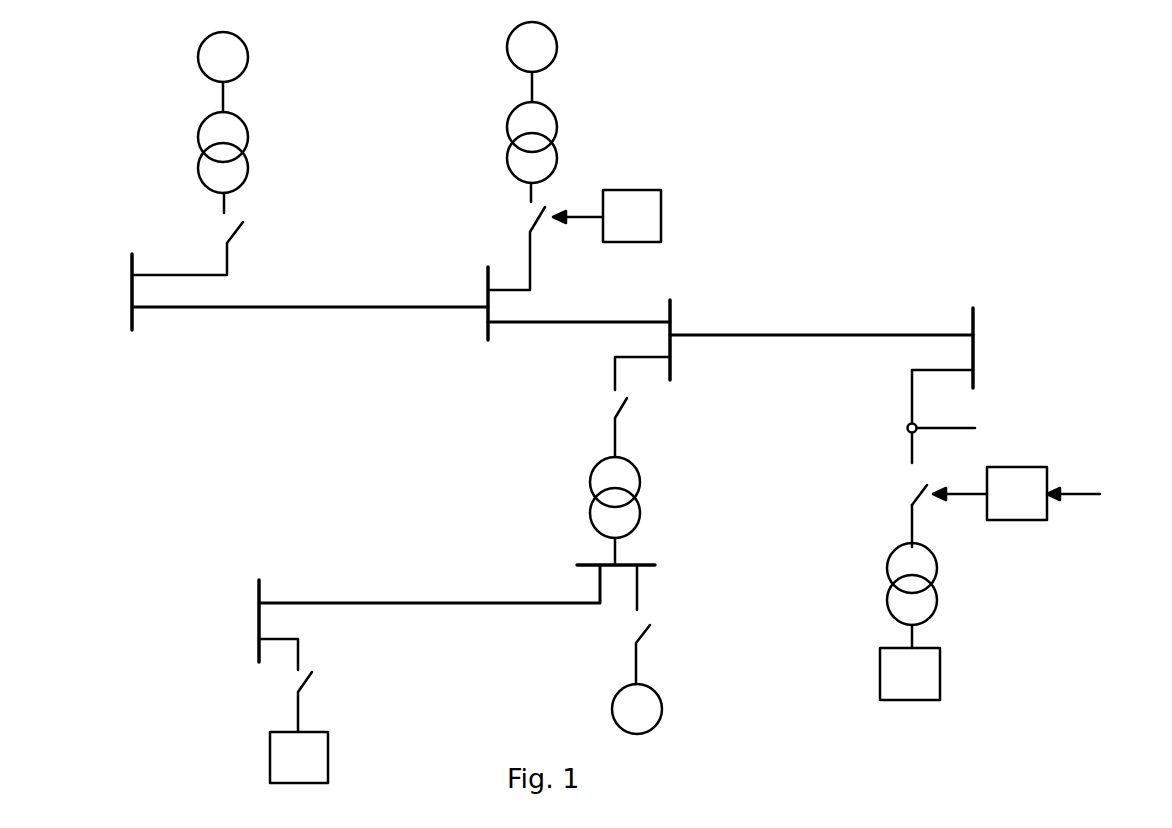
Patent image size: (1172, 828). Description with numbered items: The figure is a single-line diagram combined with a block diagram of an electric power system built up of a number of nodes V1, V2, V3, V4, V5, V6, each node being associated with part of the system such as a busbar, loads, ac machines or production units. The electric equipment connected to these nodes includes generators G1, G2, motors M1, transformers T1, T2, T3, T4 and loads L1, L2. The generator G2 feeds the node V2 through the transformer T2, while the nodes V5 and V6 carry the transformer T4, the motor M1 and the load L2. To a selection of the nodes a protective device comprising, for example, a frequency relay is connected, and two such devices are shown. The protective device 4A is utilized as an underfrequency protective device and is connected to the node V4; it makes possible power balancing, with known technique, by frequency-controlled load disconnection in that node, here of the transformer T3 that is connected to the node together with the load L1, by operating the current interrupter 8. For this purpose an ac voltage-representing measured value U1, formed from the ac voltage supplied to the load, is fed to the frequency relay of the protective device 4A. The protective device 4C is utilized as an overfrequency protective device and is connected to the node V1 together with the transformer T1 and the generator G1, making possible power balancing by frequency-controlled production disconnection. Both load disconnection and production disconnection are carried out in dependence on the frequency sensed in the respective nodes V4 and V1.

The generator G1 is at (505, 57).
The generator G2 is at (198, 66).
The transformer T1 is at (505, 160).
The transformer T2 is at (197, 173).
The transformer T3 is at (887, 563).
The transformer T4 is at (640, 478).
The node V1 is at (485, 277).
The node V2 is at (128, 270).
The node V3 is at (672, 352).
The node V4 is at (975, 320).
The node V5 is at (598, 565).
The node V6 is at (257, 618).
The protective device 4A is at (1030, 520).
The protective device 4C is at (645, 190).
The current interrupter 8 is at (917, 488).
The ac voltage-representing measured value U1 is at (1028, 455).
The load L1 is at (940, 678).
The load L2 is at (268, 758).
The motor M1 is at (655, 692).